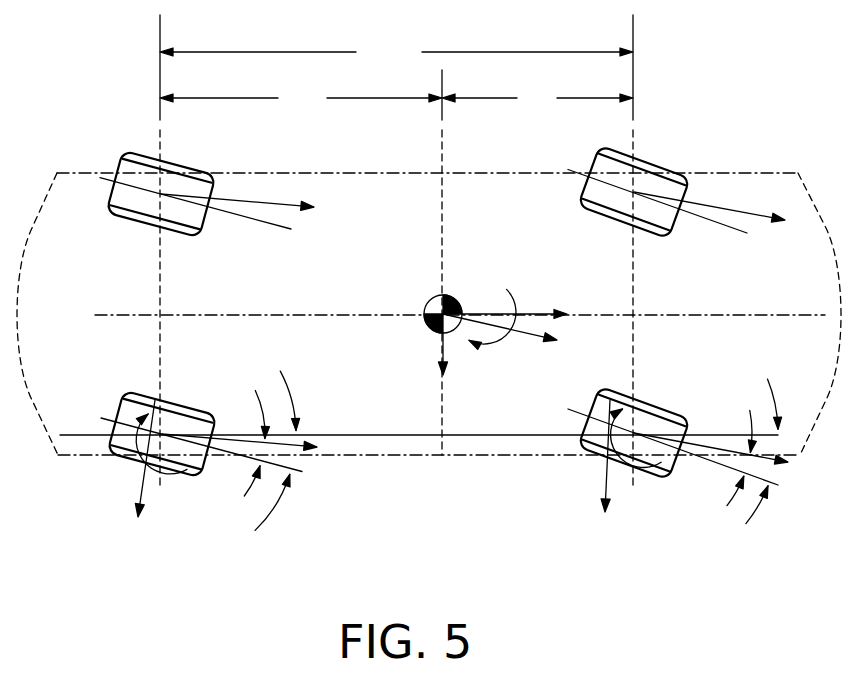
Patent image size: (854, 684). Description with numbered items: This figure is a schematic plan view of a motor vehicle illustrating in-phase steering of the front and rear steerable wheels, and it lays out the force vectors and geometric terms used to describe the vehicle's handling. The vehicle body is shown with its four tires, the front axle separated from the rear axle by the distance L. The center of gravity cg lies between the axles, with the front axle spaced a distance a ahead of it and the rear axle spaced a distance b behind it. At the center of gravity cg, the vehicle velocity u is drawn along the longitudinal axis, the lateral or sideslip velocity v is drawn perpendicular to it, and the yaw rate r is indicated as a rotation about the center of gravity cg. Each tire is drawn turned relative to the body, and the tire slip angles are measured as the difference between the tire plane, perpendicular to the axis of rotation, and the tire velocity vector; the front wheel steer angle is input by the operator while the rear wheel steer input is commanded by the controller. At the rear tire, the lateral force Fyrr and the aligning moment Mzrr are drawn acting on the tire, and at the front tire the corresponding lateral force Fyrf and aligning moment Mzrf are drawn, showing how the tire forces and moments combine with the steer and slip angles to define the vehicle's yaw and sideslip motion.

The distance between front and rear axles L is at (396, 52).
The distance from front axle to center of gravity a is at (537, 94).
The distance from rear axle to center of gravity b is at (301, 92).
The center of gravity cg is at (418, 297).
The vehicle velocity u is at (514, 296).
The lateral or sideslip velocity v is at (432, 352).
The yaw rate r is at (492, 328).
The rear lateral tire force Fyrr is at (134, 479).
The rear aligning moment Mzrr is at (187, 469).
The front lateral tire force Fyrf is at (601, 478).
The front aligning moment Mzrf is at (661, 468).